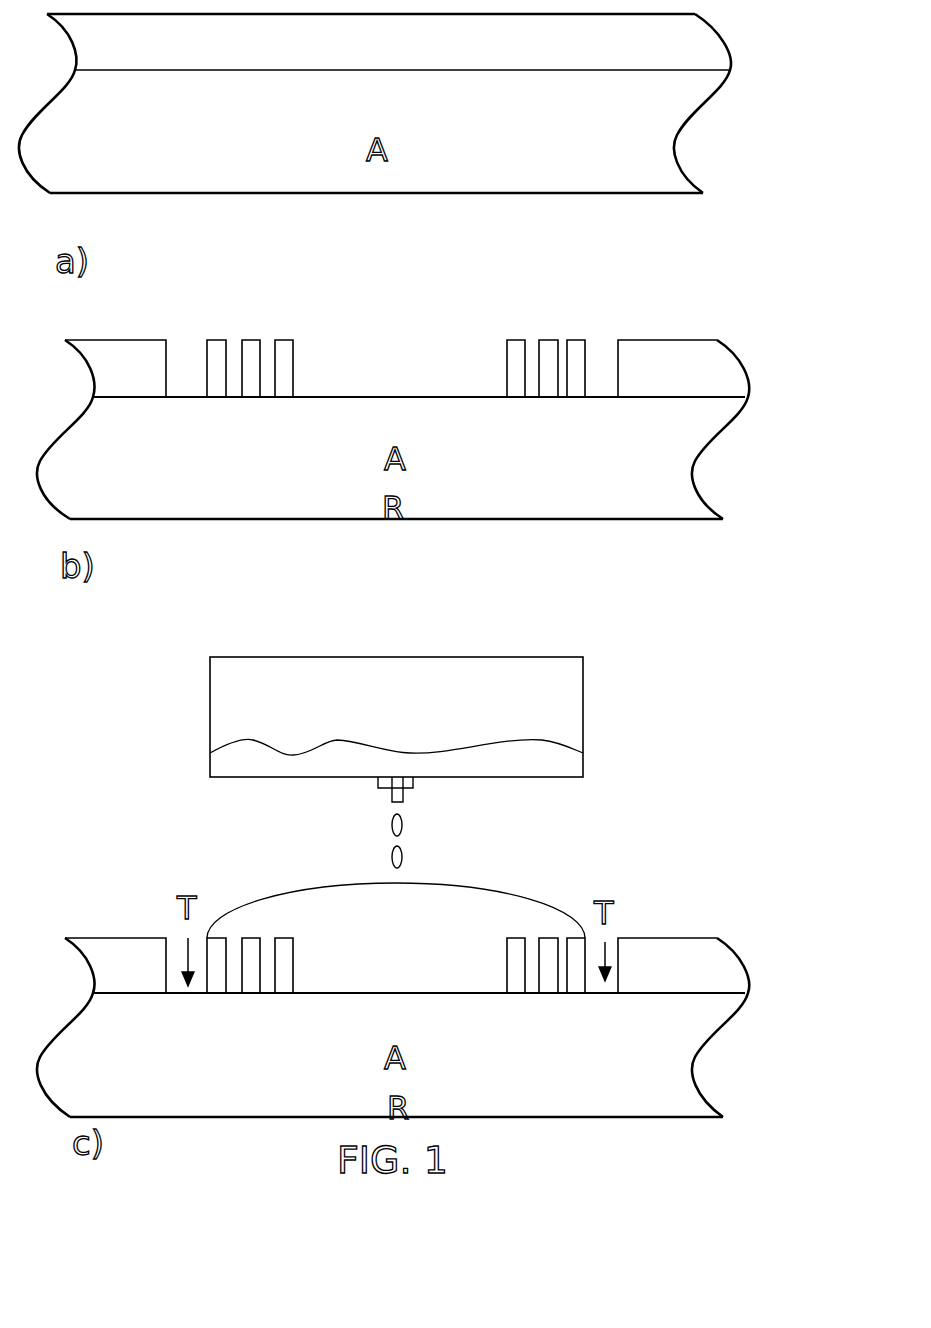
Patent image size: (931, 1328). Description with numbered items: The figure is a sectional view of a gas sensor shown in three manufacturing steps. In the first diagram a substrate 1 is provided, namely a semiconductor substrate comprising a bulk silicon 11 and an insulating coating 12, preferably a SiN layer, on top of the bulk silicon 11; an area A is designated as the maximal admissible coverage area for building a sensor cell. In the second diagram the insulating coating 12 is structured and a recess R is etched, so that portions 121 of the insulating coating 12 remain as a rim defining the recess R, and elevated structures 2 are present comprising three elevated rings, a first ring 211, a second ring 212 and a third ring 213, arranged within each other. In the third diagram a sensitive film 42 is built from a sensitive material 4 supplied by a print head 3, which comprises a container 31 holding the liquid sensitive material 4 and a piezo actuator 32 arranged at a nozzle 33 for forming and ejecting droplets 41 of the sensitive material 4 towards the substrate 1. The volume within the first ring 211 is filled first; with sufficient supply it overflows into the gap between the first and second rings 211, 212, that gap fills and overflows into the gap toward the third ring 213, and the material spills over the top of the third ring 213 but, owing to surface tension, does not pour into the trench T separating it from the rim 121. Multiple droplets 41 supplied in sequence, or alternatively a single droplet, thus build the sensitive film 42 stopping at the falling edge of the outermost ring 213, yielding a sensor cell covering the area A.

The substrate 1 is at (748, 14).
The bulk silicon 11 is at (173, 1052).
The insulating coating 12 is at (189, 71).
The portions of the insulating coating 121 is at (391, 666).
The elevated structures 2 is at (363, 637).
The first ring 211 is at (507, 340).
The second ring 212 is at (547, 340).
The third ring 213 is at (578, 340).
The print head 3 is at (381, 741).
The container 31 is at (583, 705).
The piezo actuator 32 is at (413, 788).
The nozzle 33 is at (392, 800).
The sensitive material 4 is at (425, 765).
The droplets 41 is at (376, 828).
The sensitive film 42 is at (430, 898).